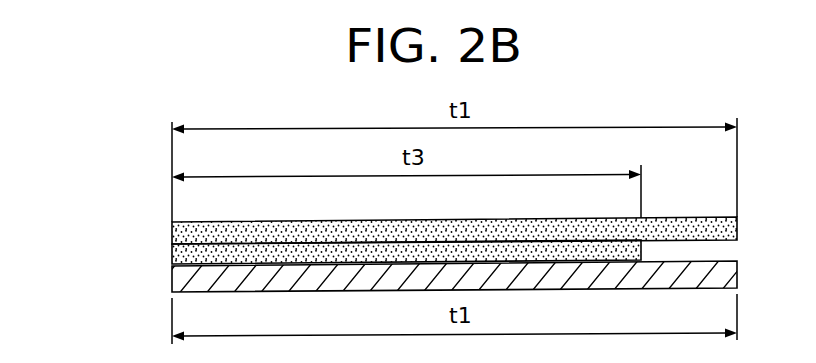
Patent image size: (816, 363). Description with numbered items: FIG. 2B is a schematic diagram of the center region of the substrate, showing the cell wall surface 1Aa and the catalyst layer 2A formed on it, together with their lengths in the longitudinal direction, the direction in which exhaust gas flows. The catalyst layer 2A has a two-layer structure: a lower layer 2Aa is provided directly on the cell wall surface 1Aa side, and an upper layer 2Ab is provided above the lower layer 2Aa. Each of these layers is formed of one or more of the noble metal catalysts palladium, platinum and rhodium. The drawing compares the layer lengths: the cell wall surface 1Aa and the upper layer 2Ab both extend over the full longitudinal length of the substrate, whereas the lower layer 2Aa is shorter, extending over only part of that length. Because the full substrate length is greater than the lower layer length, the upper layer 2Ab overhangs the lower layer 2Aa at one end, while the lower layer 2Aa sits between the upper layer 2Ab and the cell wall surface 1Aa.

The catalyst layer 2A is at (78, 212).
The upper layer 2Ab is at (172, 232).
The lower layer 2Aa is at (172, 254).
The cell wall surface 1Aa is at (172, 279).